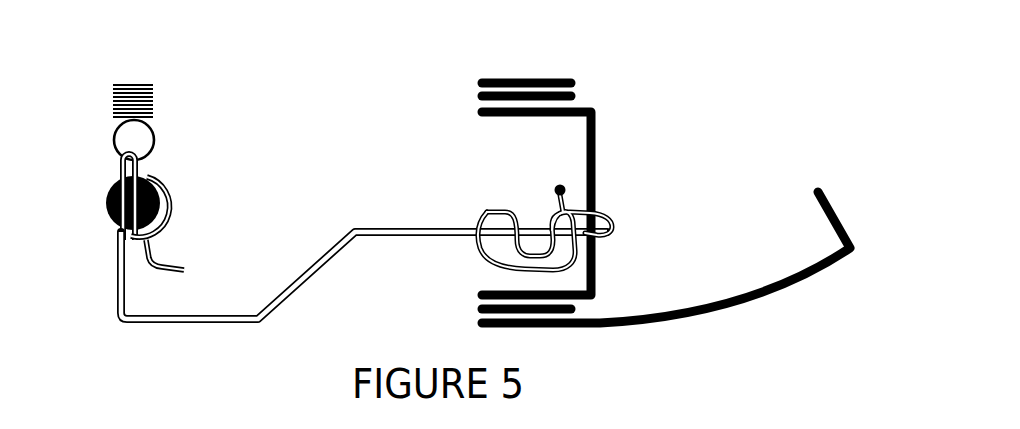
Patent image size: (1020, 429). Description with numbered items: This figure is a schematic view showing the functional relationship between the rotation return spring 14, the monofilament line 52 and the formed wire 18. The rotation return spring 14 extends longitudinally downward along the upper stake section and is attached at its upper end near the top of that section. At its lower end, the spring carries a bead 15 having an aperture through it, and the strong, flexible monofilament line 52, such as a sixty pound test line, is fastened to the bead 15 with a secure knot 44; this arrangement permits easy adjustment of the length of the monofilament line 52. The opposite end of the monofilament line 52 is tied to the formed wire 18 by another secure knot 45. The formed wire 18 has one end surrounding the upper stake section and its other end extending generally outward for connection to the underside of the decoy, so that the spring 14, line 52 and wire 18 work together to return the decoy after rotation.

The rotation return spring 14 is at (160, 105).
The bead 15 is at (163, 205).
The secure knot 44 is at (160, 167).
The monofilament line 52 is at (365, 229).
The formed wire 18 is at (598, 132).
The secure knot 45 is at (610, 222).